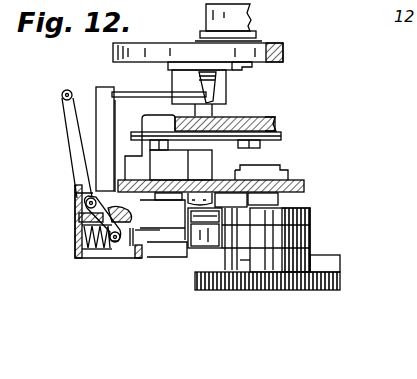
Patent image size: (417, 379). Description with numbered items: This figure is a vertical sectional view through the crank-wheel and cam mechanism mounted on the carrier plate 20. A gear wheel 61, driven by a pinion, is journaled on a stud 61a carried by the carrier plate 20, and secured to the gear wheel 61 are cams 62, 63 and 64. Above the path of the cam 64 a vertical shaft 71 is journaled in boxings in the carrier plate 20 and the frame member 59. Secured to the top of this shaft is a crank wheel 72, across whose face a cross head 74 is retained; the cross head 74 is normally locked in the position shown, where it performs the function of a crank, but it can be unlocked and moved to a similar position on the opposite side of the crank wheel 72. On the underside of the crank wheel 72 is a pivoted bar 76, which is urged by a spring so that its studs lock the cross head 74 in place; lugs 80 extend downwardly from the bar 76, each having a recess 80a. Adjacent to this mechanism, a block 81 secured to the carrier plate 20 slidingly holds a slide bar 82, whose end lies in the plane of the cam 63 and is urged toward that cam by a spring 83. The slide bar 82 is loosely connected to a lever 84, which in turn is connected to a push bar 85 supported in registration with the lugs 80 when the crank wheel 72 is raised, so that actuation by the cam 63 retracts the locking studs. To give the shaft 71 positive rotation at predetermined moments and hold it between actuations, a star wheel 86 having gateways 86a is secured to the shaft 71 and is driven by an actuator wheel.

The cross head 74 is at (250, 36).
The crank wheel 72 is at (284, 51).
The bar 76 is at (238, 66).
The lugs 80 is at (225, 104).
The recess 80a is at (168, 80).
The push bar 85 is at (125, 92).
The lever 84 is at (72, 155).
The frame member 59 is at (278, 126).
The gateways 86a is at (284, 141).
The star wheel 86 is at (228, 150).
The vertical shaft 71 is at (196, 157).
The carrier plate 20 is at (300, 184).
The stud 61a is at (265, 206).
The cam 64 is at (184, 218).
The cam 63 is at (213, 242).
The cam 62 is at (341, 262).
The gear wheel 61 is at (341, 279).
The spring 83 is at (90, 262).
The block 81 is at (118, 262).
The slide bar 82 is at (145, 262).